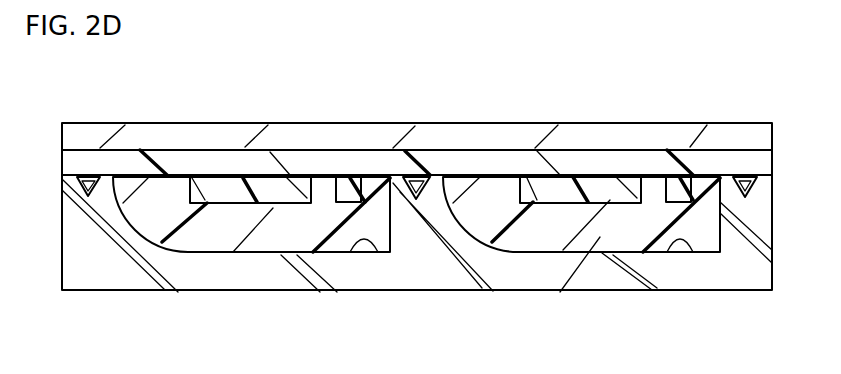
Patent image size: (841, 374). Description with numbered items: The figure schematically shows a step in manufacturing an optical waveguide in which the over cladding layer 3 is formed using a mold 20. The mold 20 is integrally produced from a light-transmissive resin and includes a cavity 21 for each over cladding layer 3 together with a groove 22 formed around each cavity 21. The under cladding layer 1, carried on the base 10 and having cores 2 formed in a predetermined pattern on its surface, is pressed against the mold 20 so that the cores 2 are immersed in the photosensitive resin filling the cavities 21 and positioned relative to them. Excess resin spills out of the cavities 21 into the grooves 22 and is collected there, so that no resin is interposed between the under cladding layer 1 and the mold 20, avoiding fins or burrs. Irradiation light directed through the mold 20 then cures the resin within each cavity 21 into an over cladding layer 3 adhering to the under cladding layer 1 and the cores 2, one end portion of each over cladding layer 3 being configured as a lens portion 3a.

The base 10 is at (137, 122).
The under cladding layer 1 is at (190, 160).
The cores 2 is at (356, 190).
The mold 20 is at (88, 278).
The over cladding layer 3 is at (285, 240).
The lens portion 3a is at (152, 213).
The groove 22 is at (97, 190).
The cavity 21 is at (378, 252).